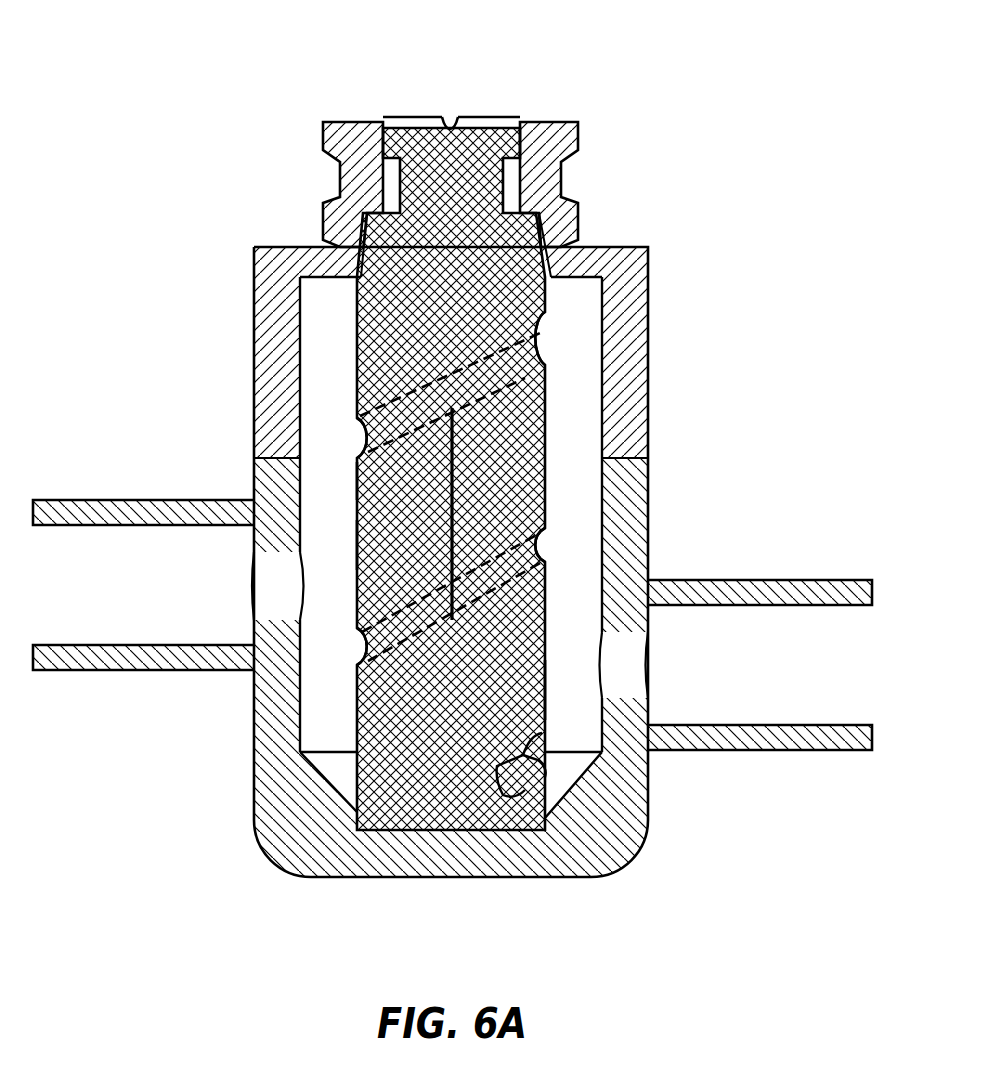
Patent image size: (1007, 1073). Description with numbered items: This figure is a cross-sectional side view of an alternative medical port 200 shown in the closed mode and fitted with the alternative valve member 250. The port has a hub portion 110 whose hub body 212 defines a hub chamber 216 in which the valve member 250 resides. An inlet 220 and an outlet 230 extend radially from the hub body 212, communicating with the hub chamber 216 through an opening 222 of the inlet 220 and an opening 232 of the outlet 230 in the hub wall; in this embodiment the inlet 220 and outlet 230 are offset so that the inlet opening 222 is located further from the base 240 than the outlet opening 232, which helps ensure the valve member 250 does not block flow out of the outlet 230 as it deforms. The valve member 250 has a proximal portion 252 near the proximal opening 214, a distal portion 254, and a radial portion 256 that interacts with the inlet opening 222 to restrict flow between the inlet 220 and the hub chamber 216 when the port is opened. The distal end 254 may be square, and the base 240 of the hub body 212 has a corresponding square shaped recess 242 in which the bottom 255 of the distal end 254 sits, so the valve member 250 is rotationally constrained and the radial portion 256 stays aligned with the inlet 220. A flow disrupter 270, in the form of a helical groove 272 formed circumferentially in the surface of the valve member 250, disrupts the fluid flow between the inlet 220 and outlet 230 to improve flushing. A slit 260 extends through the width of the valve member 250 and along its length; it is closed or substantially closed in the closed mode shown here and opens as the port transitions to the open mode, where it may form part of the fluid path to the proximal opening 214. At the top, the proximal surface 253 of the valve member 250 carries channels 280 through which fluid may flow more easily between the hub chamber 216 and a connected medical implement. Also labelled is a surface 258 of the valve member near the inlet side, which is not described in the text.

The medical port 200 is at (176, 50).
The hub portion 110 is at (238, 298).
The hub body 212 is at (254, 795).
The proximal opening 214 is at (520, 118).
The hub chamber 216 is at (582, 387).
The inlet 220 is at (68, 497).
The opening of the inlet 222 is at (278, 592).
The outlet 230 is at (836, 577).
The opening of the outlet 232 is at (625, 656).
The base 240 is at (537, 843).
The square shaped recess 242 is at (383, 833).
The valve member 250 is at (450, 258).
The proximal portion 252 is at (523, 147).
The proximal surface 253 is at (390, 118).
The distal portion 254 is at (500, 693).
The bottom 255 is at (363, 812).
The radial portion 256 is at (355, 487).
The intermediate surface 258 is at (355, 545).
The slit 260 is at (550, 430).
The flow disrupter 270 is at (360, 655).
The helical groove 272 is at (540, 340).
The channels 280 is at (450, 118).